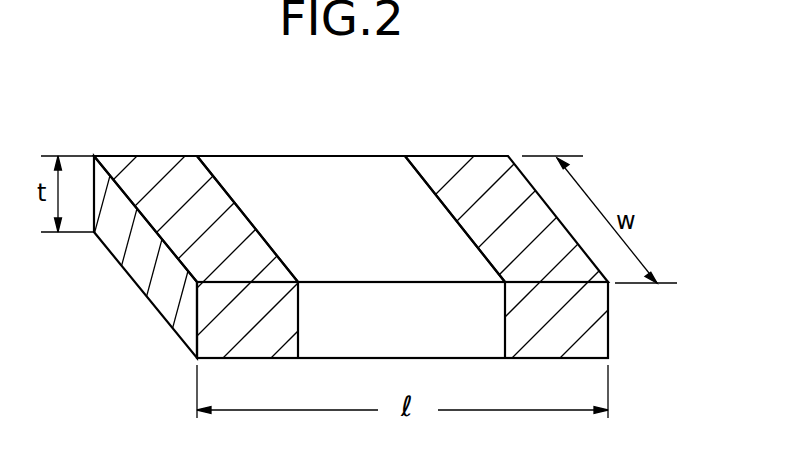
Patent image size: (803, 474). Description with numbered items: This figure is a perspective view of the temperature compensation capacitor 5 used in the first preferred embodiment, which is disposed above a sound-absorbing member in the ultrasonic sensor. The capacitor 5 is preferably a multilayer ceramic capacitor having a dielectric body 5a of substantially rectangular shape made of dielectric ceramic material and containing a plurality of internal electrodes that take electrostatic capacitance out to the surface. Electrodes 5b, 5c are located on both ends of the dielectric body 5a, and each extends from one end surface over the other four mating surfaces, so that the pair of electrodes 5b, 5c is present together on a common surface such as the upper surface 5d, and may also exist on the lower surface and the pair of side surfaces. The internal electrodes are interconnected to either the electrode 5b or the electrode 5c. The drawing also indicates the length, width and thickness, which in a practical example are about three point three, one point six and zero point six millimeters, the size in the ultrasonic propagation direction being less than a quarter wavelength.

The temperature compensation capacitor 5 is at (120, 92).
The dielectric body 5a is at (367, 156).
The electrode 5b is at (147, 273).
The electrode 5c is at (587, 323).
The upper surface 5d is at (308, 185).